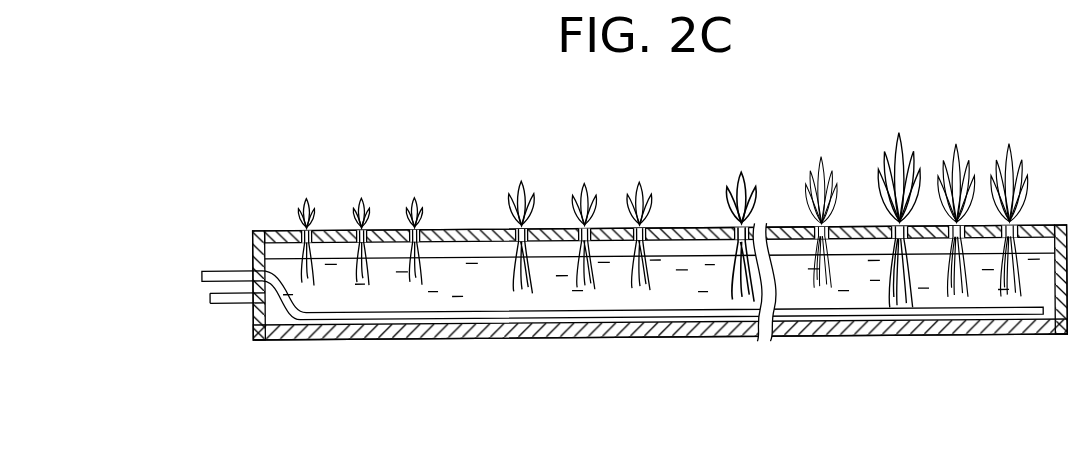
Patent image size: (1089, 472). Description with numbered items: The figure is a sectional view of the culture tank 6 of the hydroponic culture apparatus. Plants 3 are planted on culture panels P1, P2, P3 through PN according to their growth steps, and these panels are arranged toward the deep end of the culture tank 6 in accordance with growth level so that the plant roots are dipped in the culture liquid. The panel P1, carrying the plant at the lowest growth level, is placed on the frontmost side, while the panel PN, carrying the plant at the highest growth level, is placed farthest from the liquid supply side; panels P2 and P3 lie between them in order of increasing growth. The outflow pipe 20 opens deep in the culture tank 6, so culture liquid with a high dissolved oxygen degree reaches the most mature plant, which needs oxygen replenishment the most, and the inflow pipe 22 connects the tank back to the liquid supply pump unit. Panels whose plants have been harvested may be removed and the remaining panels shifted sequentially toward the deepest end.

The culture tank 6 is at (788, 171).
The plants 3 is at (421, 228).
The outflow pipe 20 is at (212, 269).
The inflow pipe 22 is at (221, 301).
The culture panel P1 is at (385, 236).
The culture panel P2 is at (613, 230).
The culture panel P3 is at (714, 230).
The culture panel PN is at (928, 226).